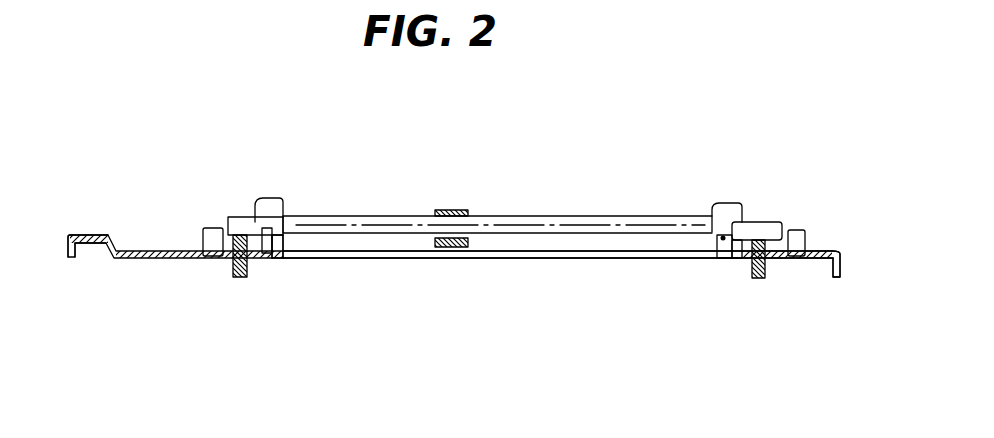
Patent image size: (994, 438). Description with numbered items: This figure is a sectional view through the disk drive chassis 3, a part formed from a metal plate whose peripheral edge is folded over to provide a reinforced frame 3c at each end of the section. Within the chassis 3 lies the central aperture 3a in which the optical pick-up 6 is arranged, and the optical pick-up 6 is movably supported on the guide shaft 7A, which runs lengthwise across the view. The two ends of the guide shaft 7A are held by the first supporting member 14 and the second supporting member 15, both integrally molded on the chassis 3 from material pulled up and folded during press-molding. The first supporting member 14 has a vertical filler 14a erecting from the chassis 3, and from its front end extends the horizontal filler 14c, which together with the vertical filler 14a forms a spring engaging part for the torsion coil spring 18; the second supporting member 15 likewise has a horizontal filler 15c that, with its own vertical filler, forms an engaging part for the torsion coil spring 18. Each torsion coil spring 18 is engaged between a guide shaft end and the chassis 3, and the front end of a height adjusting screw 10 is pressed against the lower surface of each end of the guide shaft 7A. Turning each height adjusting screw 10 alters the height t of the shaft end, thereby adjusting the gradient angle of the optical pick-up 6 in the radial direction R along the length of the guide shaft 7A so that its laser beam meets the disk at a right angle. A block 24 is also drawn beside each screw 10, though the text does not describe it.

The chassis 3 is at (146, 262).
The central aperture 3a is at (550, 258).
The reinforced frame 3c is at (92, 232).
The optical pick-up 6 is at (450, 209).
The guide shaft 7A is at (542, 216).
The height adjusting screw 10 is at (236, 273).
The first supporting member 14 is at (242, 196).
The vertical filler 14a is at (284, 240).
The horizontal filler 14c is at (268, 200).
The second supporting member 15 is at (737, 194).
The horizontal filler 15c is at (717, 205).
The torsion coil spring 18 is at (717, 243).
The block 24 is at (203, 240).
The radial direction R is at (618, 162).
The height t is at (397, 228).